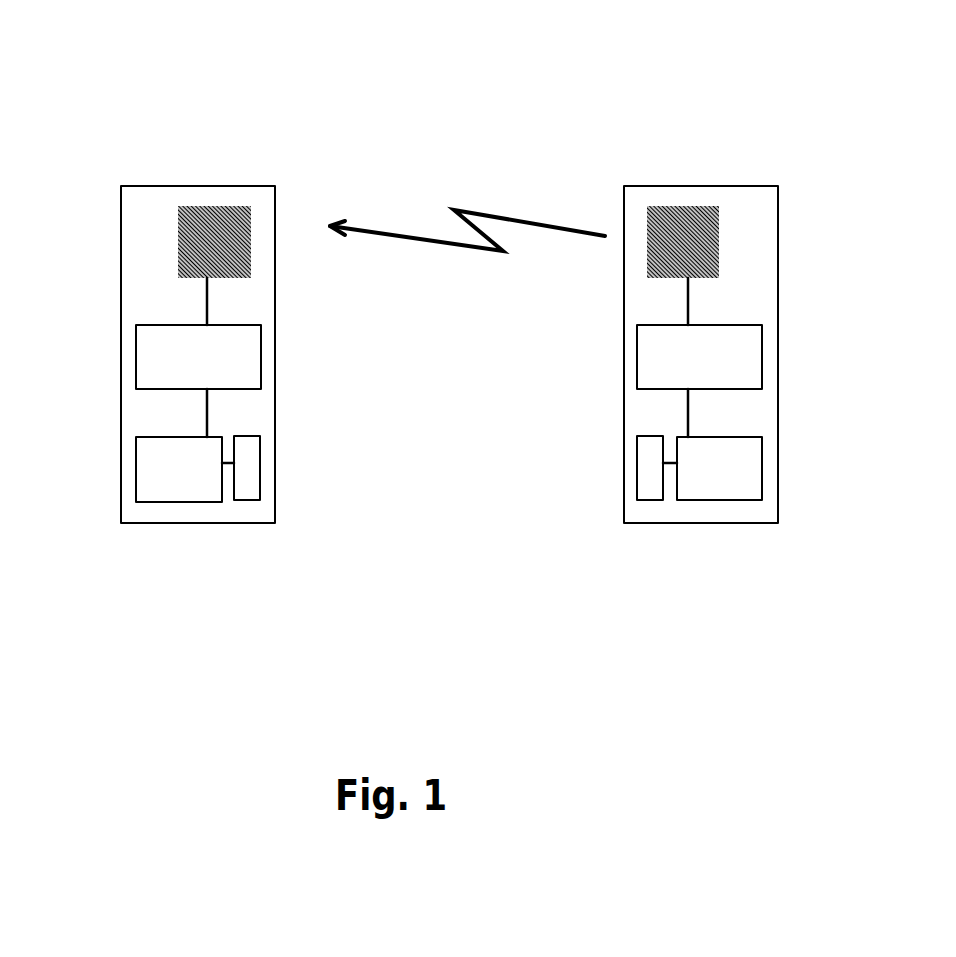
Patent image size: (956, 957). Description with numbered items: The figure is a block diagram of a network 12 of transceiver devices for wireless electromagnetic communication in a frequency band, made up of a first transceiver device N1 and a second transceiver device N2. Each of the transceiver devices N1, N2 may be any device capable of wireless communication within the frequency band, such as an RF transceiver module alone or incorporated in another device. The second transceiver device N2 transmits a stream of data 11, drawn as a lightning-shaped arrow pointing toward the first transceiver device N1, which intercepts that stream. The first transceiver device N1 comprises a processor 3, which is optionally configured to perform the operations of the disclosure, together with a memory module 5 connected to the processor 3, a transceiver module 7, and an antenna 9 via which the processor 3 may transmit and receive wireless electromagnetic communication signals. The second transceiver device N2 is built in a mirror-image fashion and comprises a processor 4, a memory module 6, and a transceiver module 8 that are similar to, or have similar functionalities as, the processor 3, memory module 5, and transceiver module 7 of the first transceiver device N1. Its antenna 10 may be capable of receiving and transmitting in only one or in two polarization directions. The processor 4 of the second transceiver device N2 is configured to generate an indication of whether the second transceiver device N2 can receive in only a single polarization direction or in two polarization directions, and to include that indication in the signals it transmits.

The first transceiver device N1 is at (117, 183).
The second transceiver device N2 is at (778, 183).
The processor 3 is at (136, 467).
The processor 4 is at (762, 470).
The memory module 5 is at (260, 458).
The memory module 6 is at (637, 455).
The transceiver module 7 is at (136, 353).
The transceiver module 8 is at (762, 353).
The antenna 9 is at (177, 230).
The antenna 10 is at (723, 230).
The stream of data 11 is at (486, 208).
The network 12 is at (292, 86).